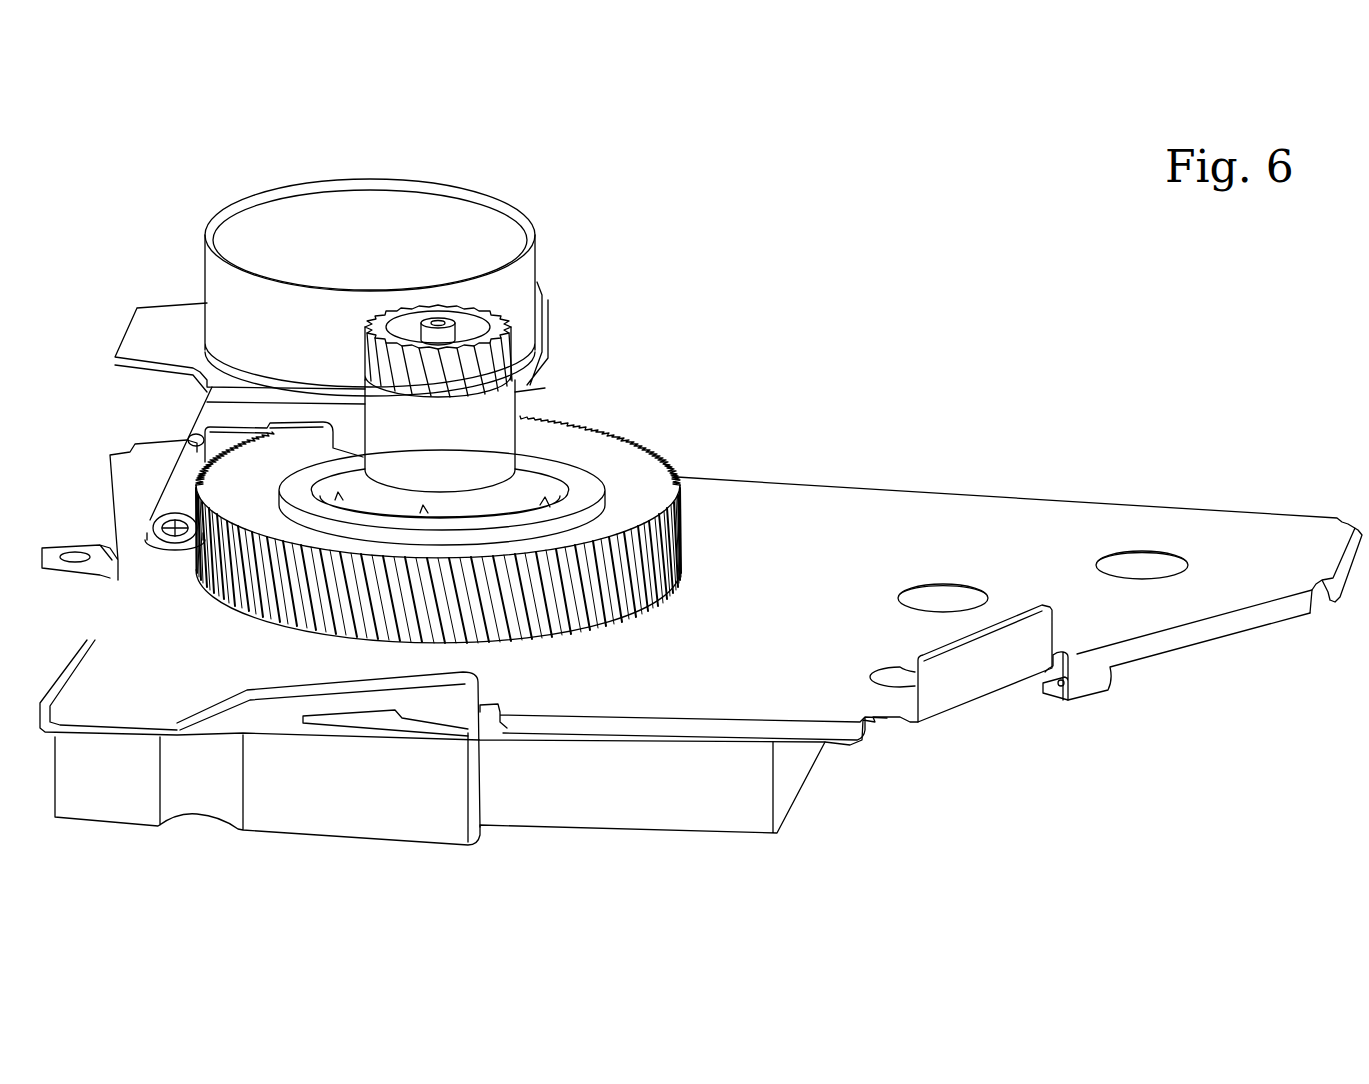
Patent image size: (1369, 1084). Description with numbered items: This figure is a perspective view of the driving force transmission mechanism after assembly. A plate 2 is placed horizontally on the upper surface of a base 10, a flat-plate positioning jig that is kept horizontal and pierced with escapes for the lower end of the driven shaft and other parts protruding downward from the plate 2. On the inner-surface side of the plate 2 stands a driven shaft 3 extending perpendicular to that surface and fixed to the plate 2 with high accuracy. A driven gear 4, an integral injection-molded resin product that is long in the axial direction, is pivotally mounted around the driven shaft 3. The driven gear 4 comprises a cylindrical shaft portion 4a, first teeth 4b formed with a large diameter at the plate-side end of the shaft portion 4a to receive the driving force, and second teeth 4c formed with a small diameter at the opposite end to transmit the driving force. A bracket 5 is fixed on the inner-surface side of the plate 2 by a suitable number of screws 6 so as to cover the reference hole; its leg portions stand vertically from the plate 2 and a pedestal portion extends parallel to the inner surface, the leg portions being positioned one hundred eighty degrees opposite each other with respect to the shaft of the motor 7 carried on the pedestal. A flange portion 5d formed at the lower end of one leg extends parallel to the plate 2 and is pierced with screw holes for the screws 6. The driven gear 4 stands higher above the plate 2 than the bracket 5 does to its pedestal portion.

The plate 2 is at (933, 512).
The driven shaft 3 is at (438, 322).
The driven gear 4 is at (486, 434).
The shaft portion 4a is at (500, 437).
The first teeth 4b is at (657, 547).
The second teeth 4c is at (513, 350).
The bracket 5 is at (218, 414).
The flange portion 5d is at (178, 493).
The screws 6 is at (190, 440).
The motor 7 is at (372, 190).
The base 10 is at (672, 805).